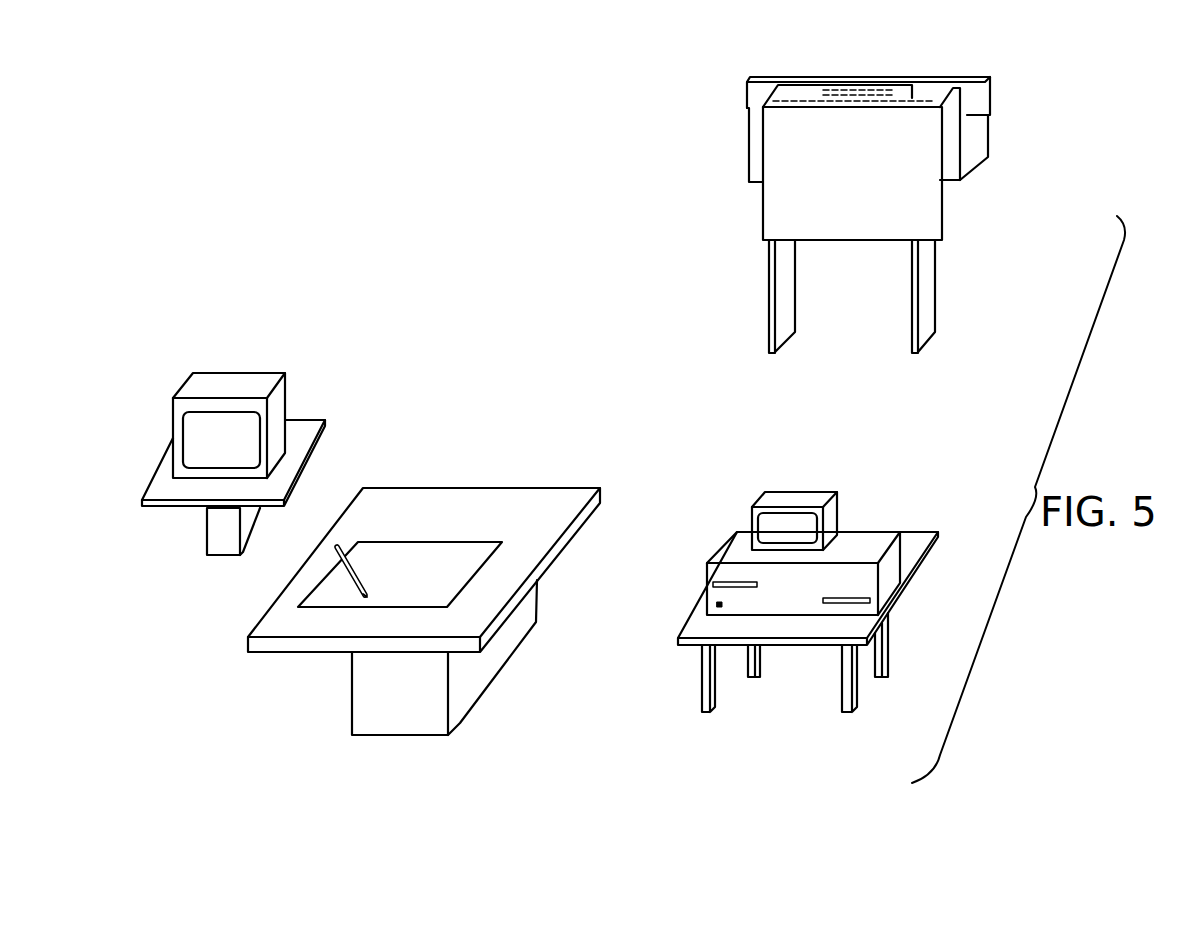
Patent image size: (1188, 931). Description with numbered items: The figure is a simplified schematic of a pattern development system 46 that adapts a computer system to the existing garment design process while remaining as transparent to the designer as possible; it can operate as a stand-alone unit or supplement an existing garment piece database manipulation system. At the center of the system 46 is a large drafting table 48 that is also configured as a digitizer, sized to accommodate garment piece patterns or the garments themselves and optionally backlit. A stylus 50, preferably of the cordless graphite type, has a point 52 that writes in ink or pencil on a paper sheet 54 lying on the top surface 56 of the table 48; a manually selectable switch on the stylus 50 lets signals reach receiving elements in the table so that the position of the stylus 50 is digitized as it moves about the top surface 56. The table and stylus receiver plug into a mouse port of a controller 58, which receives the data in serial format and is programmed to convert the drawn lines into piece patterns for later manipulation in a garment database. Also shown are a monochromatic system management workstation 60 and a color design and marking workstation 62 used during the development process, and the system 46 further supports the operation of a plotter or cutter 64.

The pattern development system 46 is at (655, 732).
The drafting table 48 is at (424, 593).
The stylus 50 is at (345, 575).
The point 52 is at (366, 596).
The paper sheet 54 is at (423, 557).
The top surface 56 is at (518, 505).
The controller 58 is at (808, 610).
The system management workstation 60 is at (830, 515).
The color design and marking workstation 62 is at (257, 385).
The plotter or cutter 64 is at (748, 200).